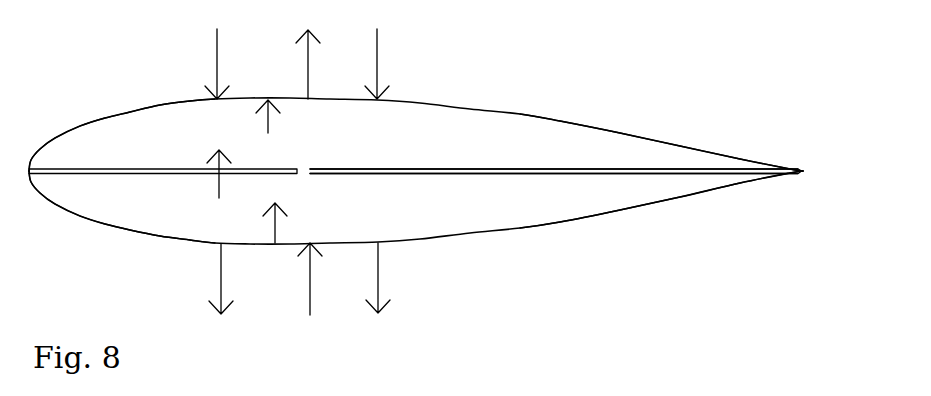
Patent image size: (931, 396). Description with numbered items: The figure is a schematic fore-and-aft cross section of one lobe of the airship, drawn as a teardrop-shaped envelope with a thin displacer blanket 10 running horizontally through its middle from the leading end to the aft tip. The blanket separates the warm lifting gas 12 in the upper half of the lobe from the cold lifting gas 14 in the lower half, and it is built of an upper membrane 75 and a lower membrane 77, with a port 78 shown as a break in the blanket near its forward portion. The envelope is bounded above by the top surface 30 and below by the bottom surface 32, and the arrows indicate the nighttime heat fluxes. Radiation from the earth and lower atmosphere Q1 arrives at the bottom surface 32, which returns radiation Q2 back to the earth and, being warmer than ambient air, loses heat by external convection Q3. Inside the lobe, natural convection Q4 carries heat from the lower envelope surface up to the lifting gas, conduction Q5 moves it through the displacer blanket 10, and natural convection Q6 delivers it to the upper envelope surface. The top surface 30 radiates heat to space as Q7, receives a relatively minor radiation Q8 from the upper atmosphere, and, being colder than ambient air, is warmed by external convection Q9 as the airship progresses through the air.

The displacer blanket 10 is at (346, 175).
The warm lifting gas 12 is at (137, 135).
The cold lifting gas 14 is at (137, 207).
The top surface 30 is at (560, 121).
The bottom surface 32 is at (560, 222).
The upper membrane 75 is at (486, 168).
The lower membrane 77 is at (487, 175).
The port 78 is at (302, 174).
The radiation from the earth and lower atmosphere Q1 is at (302, 279).
The radiation back to the earth Q2 is at (211, 279).
The external convection to ambient air Q3 is at (369, 278).
The natural convection from lower surface to lifting gas Q4 is at (265, 223).
The conduction through the displacer blanket Q5 is at (210, 174).
The natural convection from lifting gas to upper surface Q6 is at (260, 118).
The radiation to space Q7 is at (300, 64).
The radiation from the upper atmosphere Q8 is at (369, 64).
The external convection from ambient air Q9 is at (208, 64).